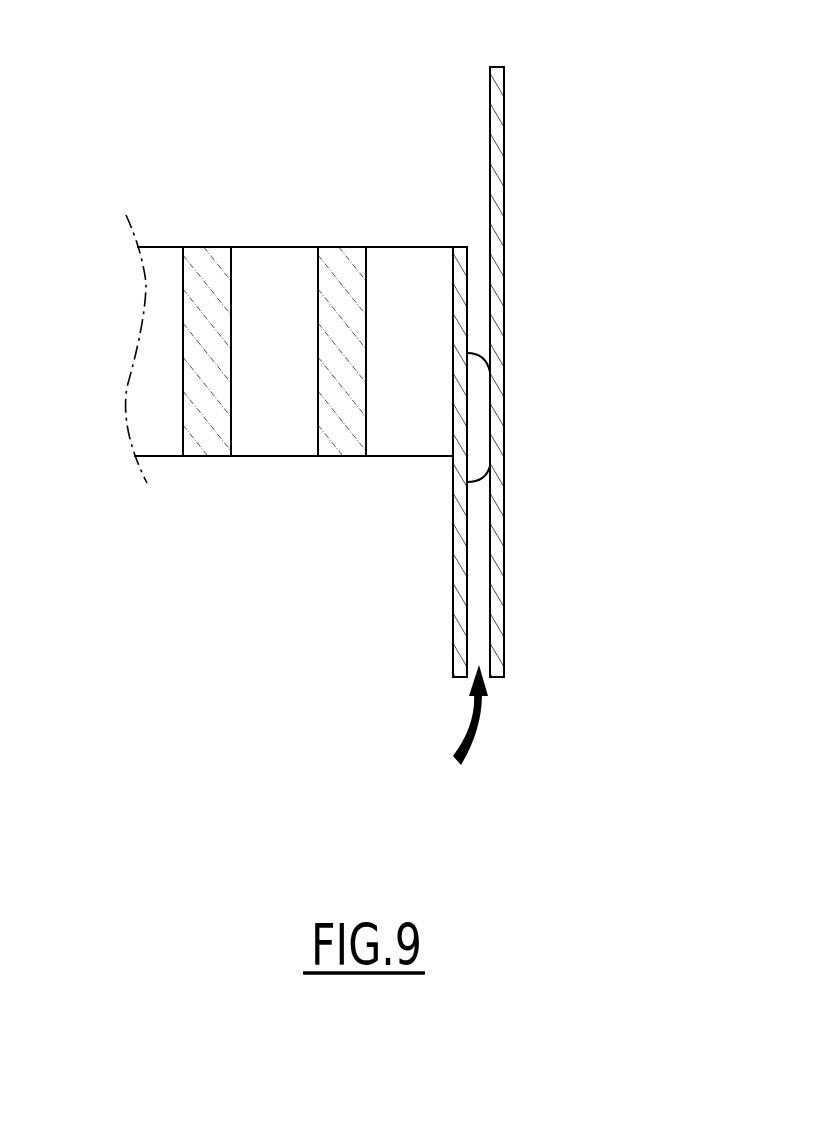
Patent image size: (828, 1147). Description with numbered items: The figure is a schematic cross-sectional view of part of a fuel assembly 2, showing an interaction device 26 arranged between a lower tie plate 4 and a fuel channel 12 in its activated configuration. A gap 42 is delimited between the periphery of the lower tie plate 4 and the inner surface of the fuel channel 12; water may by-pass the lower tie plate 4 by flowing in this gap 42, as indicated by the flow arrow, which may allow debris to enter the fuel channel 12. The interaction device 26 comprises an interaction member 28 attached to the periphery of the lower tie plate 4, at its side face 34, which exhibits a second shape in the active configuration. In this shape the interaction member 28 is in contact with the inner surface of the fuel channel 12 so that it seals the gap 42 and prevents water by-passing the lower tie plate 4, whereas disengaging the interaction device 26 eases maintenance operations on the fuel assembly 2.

The fuel assembly 2 is at (574, 386).
The lower tie plate 4 is at (134, 297).
The fuel channel 12 is at (504, 110).
The interaction device 26 is at (572, 420).
The interaction member 28 is at (476, 390).
The side face 34 is at (467, 263).
The gap 42 is at (476, 322).